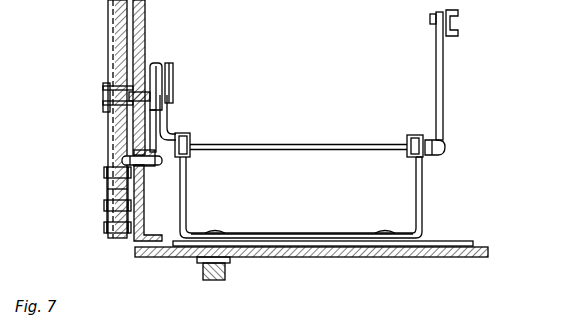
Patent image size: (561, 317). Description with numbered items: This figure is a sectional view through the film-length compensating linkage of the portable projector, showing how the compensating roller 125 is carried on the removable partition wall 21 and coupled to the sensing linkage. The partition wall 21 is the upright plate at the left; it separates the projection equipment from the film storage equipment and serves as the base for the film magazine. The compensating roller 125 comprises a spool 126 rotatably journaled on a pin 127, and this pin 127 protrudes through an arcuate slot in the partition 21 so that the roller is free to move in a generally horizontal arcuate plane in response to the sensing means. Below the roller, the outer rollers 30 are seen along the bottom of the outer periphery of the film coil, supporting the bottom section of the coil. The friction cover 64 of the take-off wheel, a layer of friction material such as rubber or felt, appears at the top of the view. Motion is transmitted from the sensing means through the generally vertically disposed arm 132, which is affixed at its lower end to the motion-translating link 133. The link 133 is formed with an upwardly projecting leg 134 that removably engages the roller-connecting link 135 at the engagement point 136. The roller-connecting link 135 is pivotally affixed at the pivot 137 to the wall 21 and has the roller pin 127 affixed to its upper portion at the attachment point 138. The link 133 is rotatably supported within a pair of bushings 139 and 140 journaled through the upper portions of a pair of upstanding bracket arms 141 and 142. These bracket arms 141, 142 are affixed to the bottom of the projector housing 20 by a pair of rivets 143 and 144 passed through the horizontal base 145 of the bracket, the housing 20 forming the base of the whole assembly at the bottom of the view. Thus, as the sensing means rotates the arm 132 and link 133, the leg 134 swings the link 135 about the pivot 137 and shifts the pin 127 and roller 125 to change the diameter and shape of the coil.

The friction cover 64 is at (108, 6).
The partition wall 21 is at (146, 12).
The pivot 137 is at (165, 173).
The spool 126 is at (104, 86).
The compensating roller 125 is at (104, 98).
The pin 127 is at (132, 100).
The rollers 30 is at (104, 183).
The roller-connecting link 135 is at (158, 68).
The attachment point 138 is at (160, 97).
The engagement point 136 is at (176, 92).
The upwardly projecting leg 134 is at (175, 112).
The bushing 139 is at (196, 132).
The motion-translating link 133 is at (316, 147).
The bushing 140 is at (408, 137).
The vertically disposed arm 132 is at (443, 88).
The bracket arm 141 is at (187, 190).
The bracket arm 142 is at (422, 192).
The rivet 143 is at (217, 232).
The horizontal base 145 is at (302, 233).
The rivet 144 is at (383, 232).
The portable housing 20 is at (437, 245).